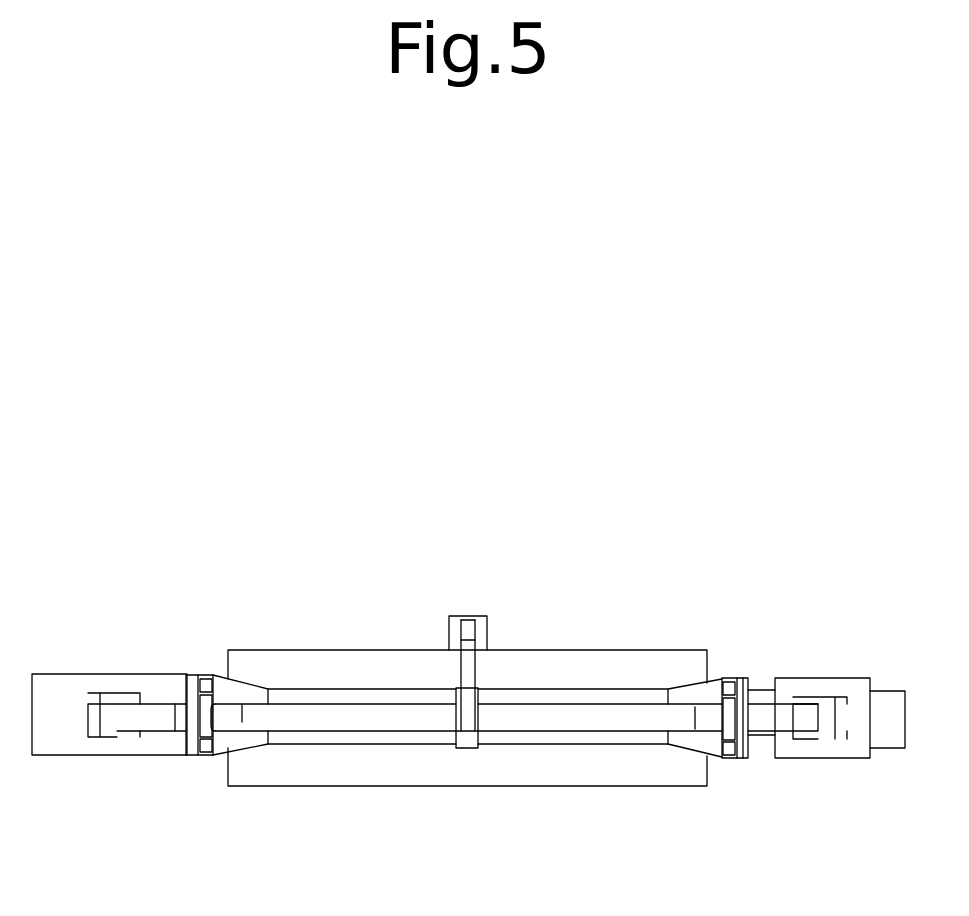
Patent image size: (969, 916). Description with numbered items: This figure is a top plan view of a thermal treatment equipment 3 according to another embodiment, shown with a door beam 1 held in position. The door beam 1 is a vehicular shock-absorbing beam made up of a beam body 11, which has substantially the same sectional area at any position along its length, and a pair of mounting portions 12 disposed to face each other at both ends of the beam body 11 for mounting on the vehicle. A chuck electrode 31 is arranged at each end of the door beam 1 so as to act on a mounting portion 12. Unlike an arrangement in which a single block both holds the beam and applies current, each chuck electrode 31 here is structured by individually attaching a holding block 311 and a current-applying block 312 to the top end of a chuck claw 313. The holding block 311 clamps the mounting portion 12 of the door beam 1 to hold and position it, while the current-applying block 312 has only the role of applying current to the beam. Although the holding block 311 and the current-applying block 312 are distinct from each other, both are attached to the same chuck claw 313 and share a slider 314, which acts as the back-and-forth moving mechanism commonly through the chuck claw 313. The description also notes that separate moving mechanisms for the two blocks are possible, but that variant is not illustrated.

The door beam 1 is at (358, 693).
The beam body 11 is at (403, 722).
The mounting portion 12 is at (230, 744).
The thermal treatment equipment 3 is at (82, 657).
The chuck electrode 31 is at (181, 733).
The holding block 311 is at (210, 677).
The current-applying block 312 is at (205, 708).
The chuck claw 313 is at (135, 715).
The slider 314 is at (887, 737).